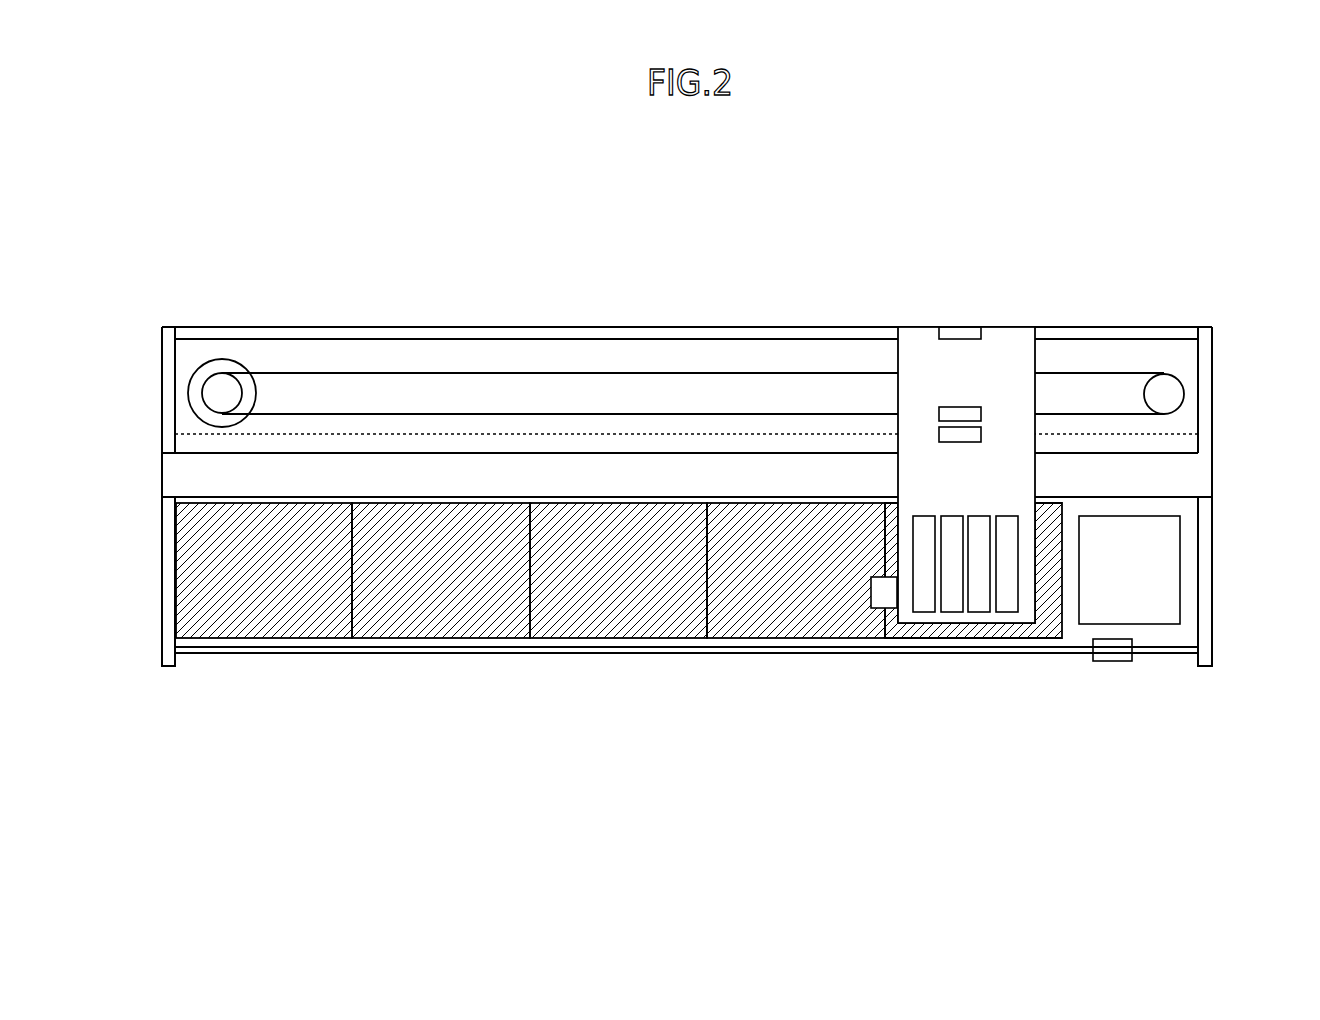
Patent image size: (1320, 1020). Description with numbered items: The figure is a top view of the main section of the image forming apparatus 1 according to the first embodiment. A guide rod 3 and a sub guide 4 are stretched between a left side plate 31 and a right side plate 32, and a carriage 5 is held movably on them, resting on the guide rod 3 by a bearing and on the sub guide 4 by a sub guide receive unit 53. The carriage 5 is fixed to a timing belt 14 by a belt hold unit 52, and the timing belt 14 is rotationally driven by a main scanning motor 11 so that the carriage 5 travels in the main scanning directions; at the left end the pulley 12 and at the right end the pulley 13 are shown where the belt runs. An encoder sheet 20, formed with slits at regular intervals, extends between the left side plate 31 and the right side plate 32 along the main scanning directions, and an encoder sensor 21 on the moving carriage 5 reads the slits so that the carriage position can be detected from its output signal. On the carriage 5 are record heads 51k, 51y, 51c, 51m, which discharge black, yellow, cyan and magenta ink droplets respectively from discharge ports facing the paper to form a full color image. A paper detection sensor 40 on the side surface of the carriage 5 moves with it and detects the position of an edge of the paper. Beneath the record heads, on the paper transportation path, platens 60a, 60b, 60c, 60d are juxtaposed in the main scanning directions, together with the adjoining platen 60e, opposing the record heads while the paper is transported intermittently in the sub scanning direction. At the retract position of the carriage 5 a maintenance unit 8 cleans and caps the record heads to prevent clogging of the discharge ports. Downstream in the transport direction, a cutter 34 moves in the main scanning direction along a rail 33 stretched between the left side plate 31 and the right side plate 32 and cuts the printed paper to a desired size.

The image forming apparatus 1 is at (153, 184).
The guide rod 3 is at (175, 473).
The sub guide 4 is at (670, 327).
The carriage 5 is at (1017, 327).
The maintenance unit 8 is at (1158, 610).
The main scanning motor 11 is at (207, 360).
The pulley shaft 12 is at (222, 378).
The driven pulley 13 is at (1163, 373).
The timing belt 14 is at (323, 373).
The encoder sheet 20 is at (493, 433).
The encoder sensor 21 is at (966, 430).
The left side plate 31 is at (162, 558).
The right side plate 32 is at (1212, 537).
The rail 33 is at (1143, 656).
The cutter 34 is at (1113, 661).
The paper detection sensor 40 is at (875, 615).
The record head 51k is at (925, 612).
The record head 51y is at (953, 612).
The record head 51c is at (978, 612).
The record head 51m is at (1007, 612).
The belt hold unit 52 is at (953, 407).
The sub guide receive unit 53 is at (960, 325).
The platen 60a is at (265, 618).
The platen 60b is at (453, 618).
The platen 60c is at (642, 620).
The platen 60d is at (795, 618).
The main tank e 60e is at (893, 638).